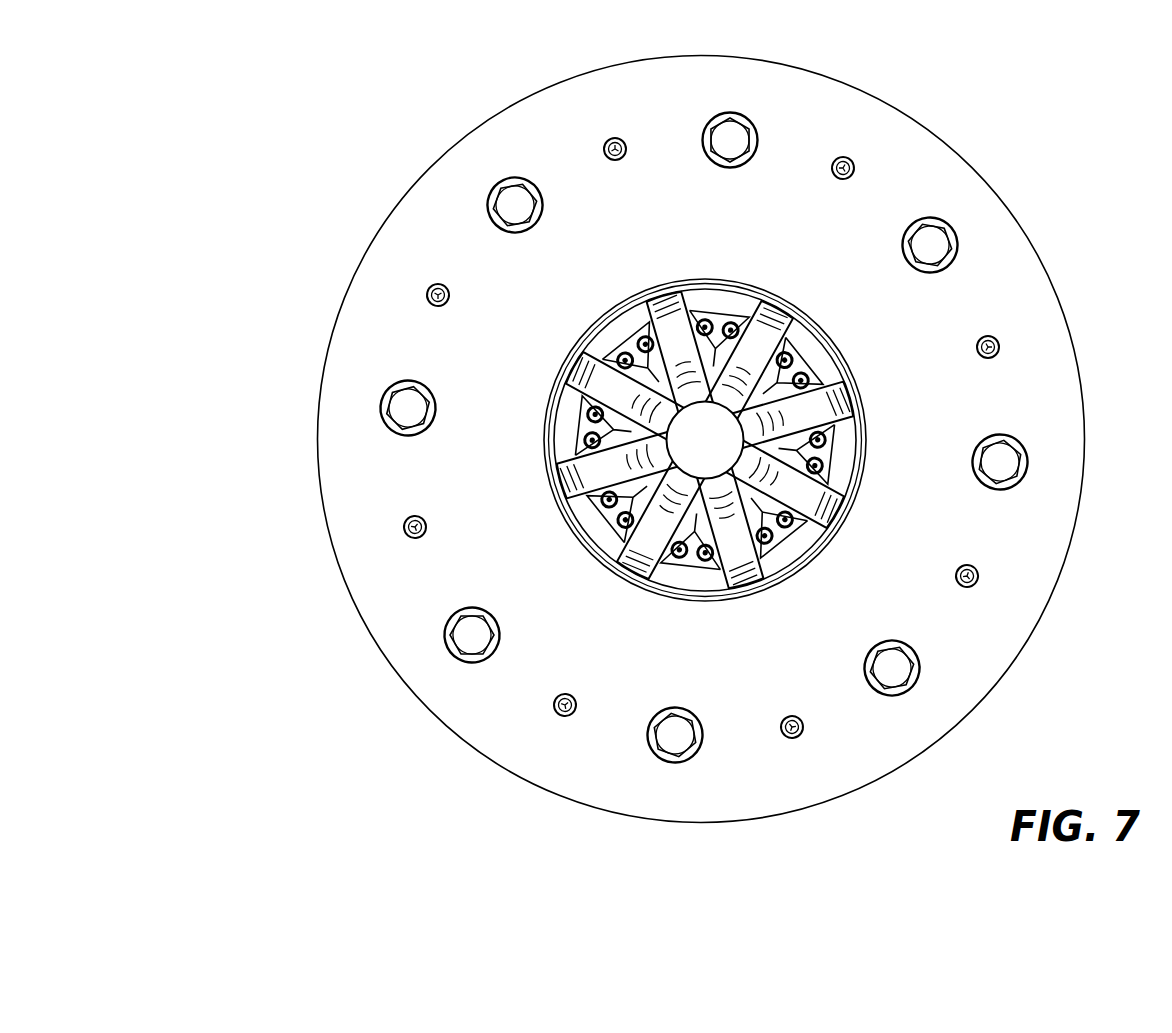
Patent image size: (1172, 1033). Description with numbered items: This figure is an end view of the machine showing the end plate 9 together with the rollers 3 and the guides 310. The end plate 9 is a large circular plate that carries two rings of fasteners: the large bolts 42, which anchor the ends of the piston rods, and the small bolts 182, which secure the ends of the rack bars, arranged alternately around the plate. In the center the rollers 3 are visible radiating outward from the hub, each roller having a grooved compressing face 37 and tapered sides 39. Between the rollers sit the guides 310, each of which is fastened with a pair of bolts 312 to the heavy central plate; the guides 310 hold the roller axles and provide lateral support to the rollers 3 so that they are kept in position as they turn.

The end plate 9 is at (1000, 297).
The large bolts 42 is at (382, 433).
The small bolts 182 is at (405, 528).
The guides 310 is at (702, 419).
The bolts 312 is at (647, 337).
The rollers 3 is at (602, 352).
The grooved compressing faces 37 is at (550, 485).
The tapered sides 39 is at (820, 437).